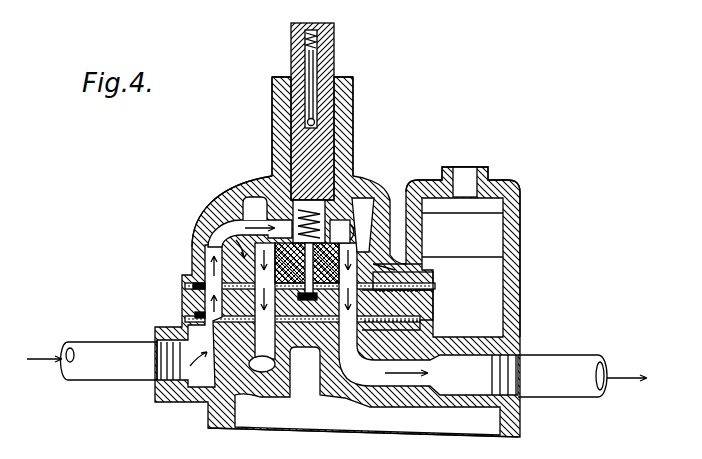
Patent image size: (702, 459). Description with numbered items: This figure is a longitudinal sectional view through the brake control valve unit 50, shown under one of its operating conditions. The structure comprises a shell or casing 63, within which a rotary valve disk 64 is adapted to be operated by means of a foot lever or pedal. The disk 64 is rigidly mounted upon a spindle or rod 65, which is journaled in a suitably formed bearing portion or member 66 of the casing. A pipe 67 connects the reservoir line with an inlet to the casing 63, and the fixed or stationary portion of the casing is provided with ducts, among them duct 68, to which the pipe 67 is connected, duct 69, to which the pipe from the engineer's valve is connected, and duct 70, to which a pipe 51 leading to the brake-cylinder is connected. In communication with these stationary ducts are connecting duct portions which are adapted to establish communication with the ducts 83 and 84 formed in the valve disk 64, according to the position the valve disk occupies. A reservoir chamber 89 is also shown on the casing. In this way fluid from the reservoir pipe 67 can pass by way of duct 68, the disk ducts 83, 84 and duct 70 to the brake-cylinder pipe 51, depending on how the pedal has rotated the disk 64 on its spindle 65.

The valve unit 50 is at (221, 153).
The pipe 51 is at (576, 389).
The shell or casing 63 is at (205, 217).
The rotary valve disk 64 is at (369, 268).
The spindle or rod 65 is at (334, 48).
The bearing portion or member 66 is at (272, 103).
The pipe 67 is at (125, 374).
The duct 68 is at (220, 303).
The duct 69 is at (284, 378).
The duct 70 is at (356, 301).
The duct 83 is at (420, 282).
The duct 84 is at (250, 248).
The reservoir 89 is at (516, 222).